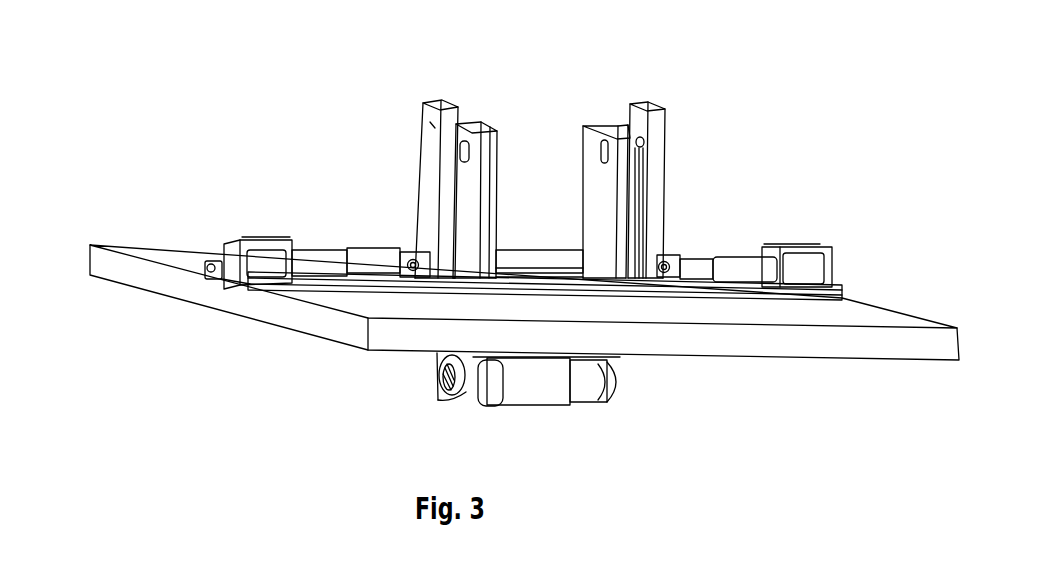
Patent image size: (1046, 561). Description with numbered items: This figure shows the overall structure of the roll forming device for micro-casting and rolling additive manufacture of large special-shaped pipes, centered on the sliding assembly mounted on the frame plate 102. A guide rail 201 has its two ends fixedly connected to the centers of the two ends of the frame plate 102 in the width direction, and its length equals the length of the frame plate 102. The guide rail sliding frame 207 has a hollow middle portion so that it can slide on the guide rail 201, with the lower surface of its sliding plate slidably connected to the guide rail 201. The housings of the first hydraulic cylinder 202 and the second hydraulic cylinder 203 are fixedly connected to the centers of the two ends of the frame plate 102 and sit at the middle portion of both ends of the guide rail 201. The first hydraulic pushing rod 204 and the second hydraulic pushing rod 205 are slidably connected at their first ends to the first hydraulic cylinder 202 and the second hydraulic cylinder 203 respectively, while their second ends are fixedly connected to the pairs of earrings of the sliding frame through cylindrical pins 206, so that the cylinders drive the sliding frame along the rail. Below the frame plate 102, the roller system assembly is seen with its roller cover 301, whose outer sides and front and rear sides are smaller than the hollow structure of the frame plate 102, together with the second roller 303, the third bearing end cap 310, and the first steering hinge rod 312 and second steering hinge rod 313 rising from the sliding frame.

The frame plate 102 is at (337, 327).
The guide rail 201 is at (210, 268).
The first hydraulic cylinder 202 is at (235, 248).
The second hydraulic cylinder 203 is at (807, 273).
The first hydraulic pushing rod 204 is at (365, 260).
The second hydraulic pushing rod 205 is at (693, 267).
The cylindrical pin 206 is at (412, 266).
The guide rail sliding frame 207 is at (435, 127).
The first steering hinge rod 312 is at (462, 153).
The roller cover 301 is at (598, 143).
The second steering hinge rod 313 is at (640, 153).
The second roller 303 is at (543, 390).
The third bearing end cap 310 is at (457, 393).